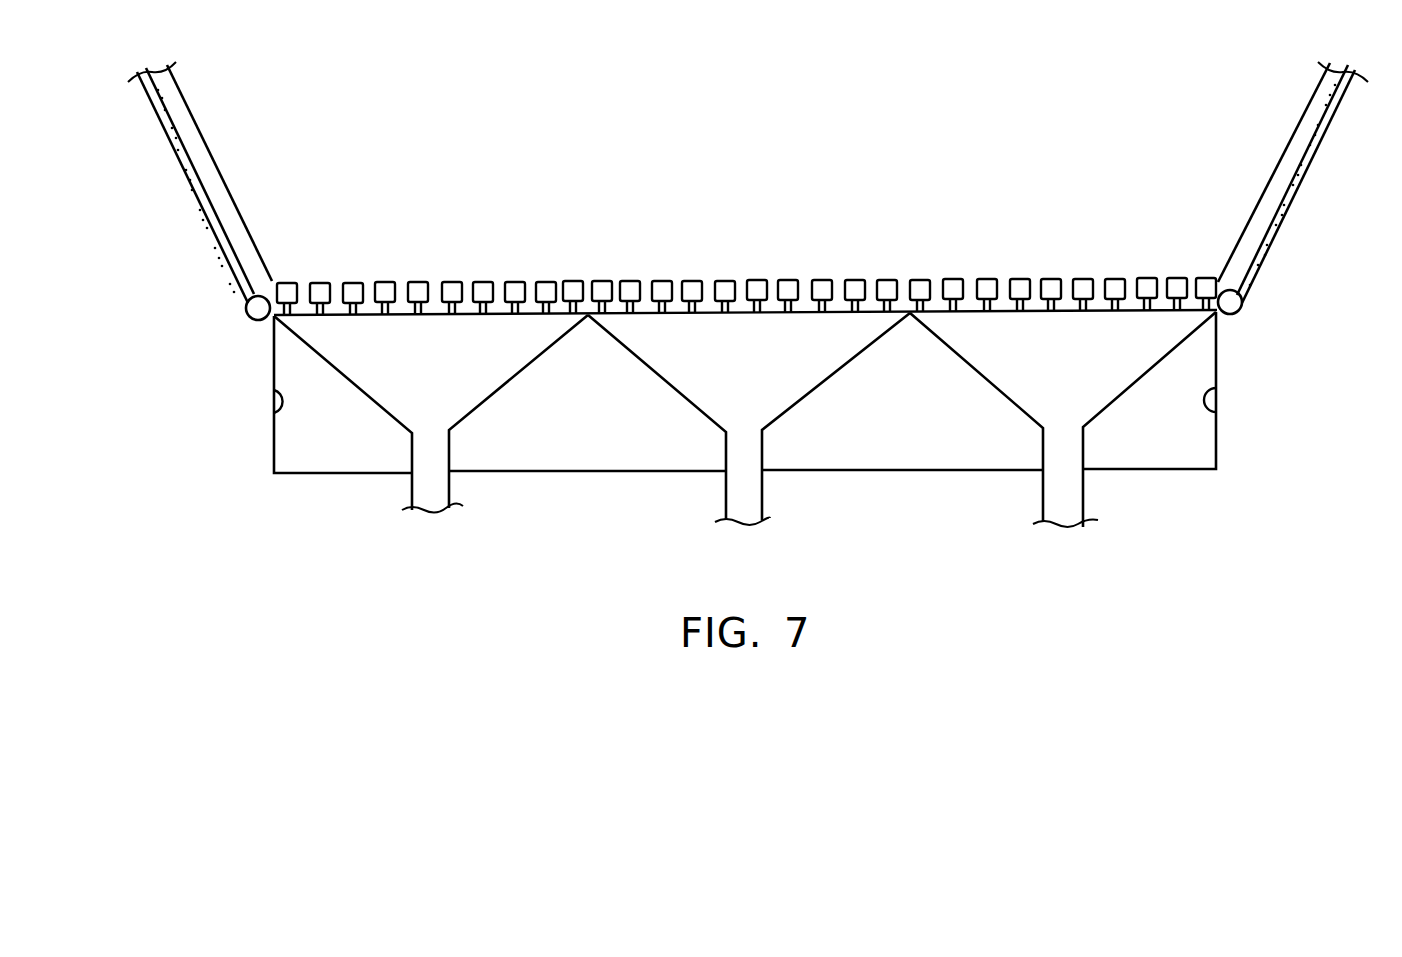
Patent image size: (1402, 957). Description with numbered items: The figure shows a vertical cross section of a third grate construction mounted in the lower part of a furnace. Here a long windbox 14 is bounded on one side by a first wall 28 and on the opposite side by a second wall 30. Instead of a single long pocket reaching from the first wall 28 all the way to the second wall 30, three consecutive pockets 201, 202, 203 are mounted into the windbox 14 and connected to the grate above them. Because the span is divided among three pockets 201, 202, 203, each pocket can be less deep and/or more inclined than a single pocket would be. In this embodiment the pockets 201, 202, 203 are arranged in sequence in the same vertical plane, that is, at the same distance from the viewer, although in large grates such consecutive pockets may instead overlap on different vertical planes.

The windbox 14 is at (335, 442).
The first pocket 201 is at (420, 343).
The second pocket 202 is at (717, 346).
The third pocket 203 is at (1045, 350).
The first wall 28 is at (283, 413).
The second wall 30 is at (1215, 412).